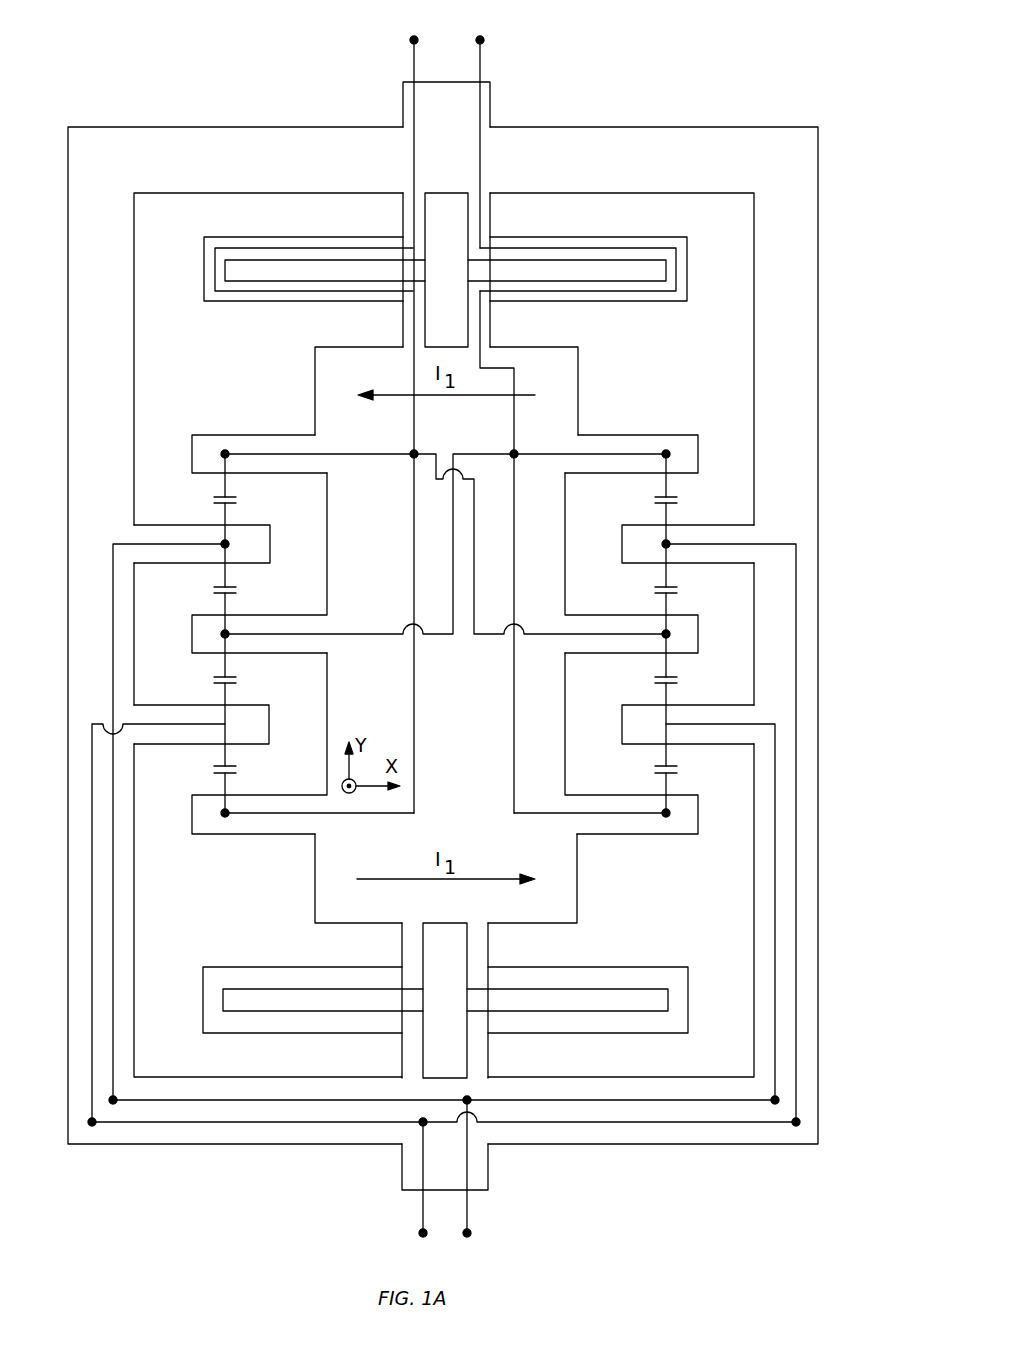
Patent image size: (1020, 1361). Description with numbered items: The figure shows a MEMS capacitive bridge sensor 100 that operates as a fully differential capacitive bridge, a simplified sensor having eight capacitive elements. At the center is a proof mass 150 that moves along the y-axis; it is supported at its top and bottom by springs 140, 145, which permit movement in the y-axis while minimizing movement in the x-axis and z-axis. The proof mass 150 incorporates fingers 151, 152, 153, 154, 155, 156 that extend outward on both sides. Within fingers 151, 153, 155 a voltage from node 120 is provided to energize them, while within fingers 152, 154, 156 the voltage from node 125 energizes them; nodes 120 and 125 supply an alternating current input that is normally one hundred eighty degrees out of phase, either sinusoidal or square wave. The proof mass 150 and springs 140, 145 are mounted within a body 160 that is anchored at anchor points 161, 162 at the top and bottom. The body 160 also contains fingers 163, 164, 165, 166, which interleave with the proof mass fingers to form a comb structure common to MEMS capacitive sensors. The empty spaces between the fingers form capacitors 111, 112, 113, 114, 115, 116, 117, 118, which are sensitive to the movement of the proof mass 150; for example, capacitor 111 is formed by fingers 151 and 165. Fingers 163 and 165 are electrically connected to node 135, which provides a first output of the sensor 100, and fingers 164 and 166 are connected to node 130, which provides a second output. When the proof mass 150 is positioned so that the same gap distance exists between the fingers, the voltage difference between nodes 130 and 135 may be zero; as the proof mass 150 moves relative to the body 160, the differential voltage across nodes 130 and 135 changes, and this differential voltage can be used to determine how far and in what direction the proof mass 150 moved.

The capacitive bridge sensor 100 is at (742, 26).
The capacitor 111 is at (236, 497).
The capacitor 112 is at (236, 587).
The capacitor 113 is at (236, 677).
The capacitor 114 is at (236, 766).
The capacitor 115 is at (655, 497).
The capacitor 116 is at (655, 587).
The capacitor 117 is at (655, 677).
The capacitor 118 is at (655, 766).
The node 120 is at (409, 41).
The node 125 is at (484, 41).
The node 130 is at (417, 1233).
The node 135 is at (472, 1233).
The spring 140 is at (688, 271).
The spring 145 is at (688, 1001).
The proof mass 150 is at (578, 392).
The finger 151 is at (188, 456).
The finger 152 is at (188, 634).
The finger 153 is at (188, 815).
The finger 154 is at (700, 456).
The finger 155 is at (700, 634).
The finger 156 is at (700, 815).
The body 160 is at (654, 126).
The anchor point 161 is at (490, 105).
The anchor point 162 is at (489, 1168).
The finger 163 is at (620, 725).
The finger 164 is at (620, 545).
The finger 165 is at (271, 545).
The finger 166 is at (270, 725).